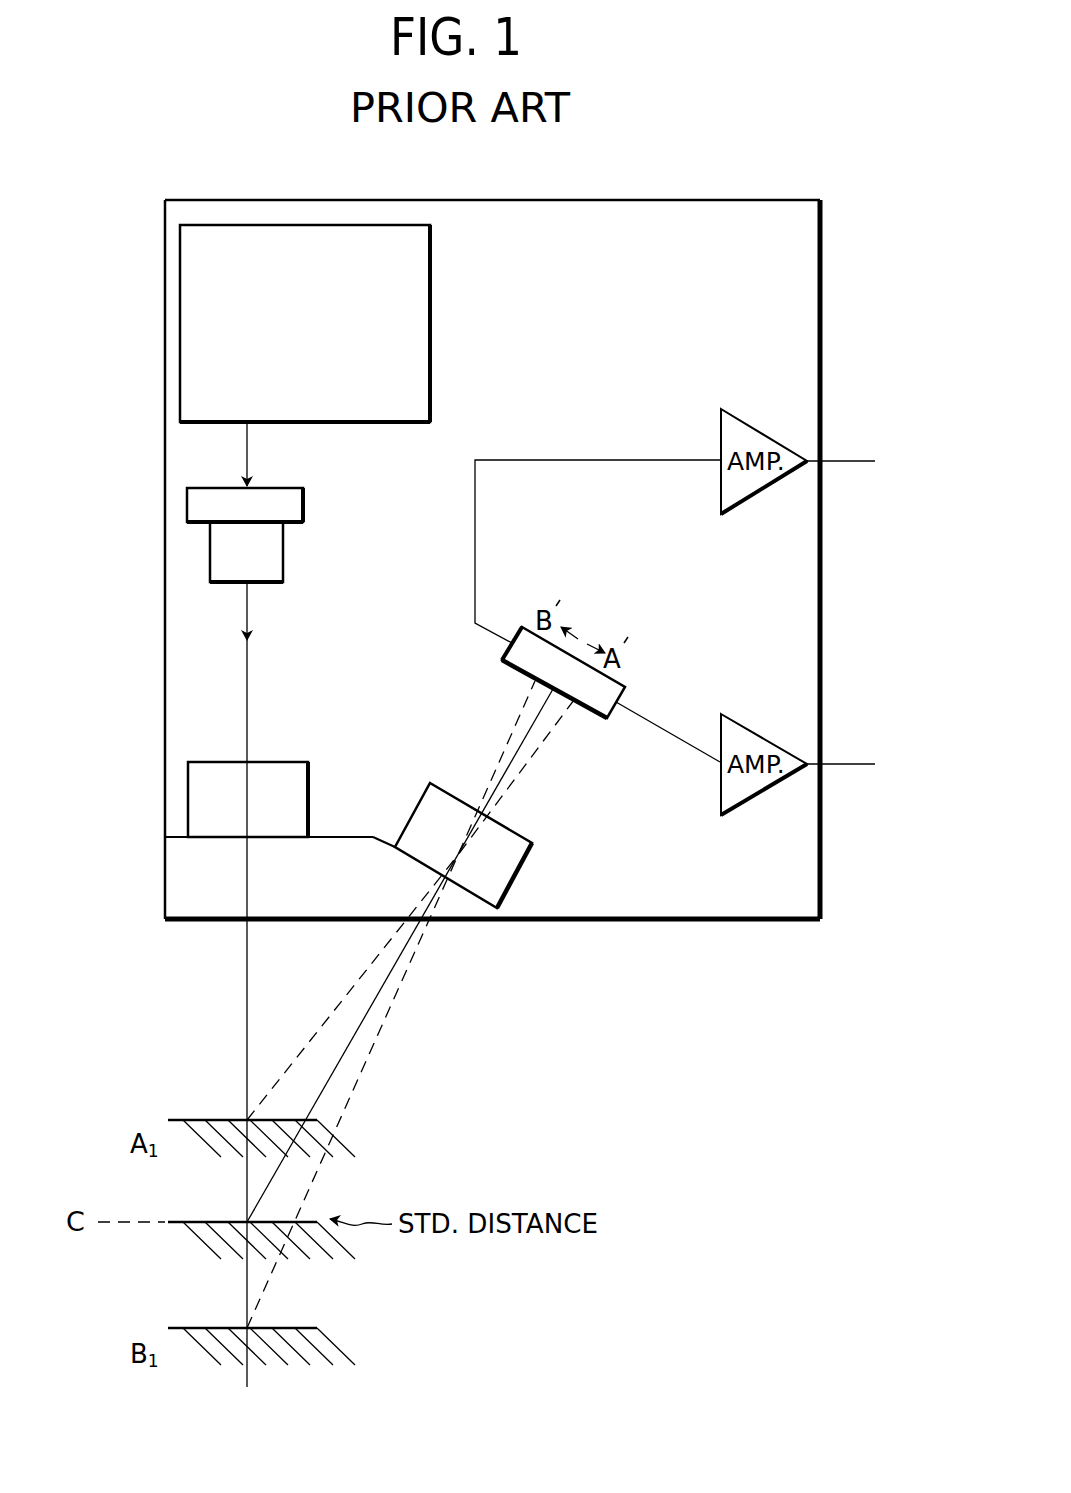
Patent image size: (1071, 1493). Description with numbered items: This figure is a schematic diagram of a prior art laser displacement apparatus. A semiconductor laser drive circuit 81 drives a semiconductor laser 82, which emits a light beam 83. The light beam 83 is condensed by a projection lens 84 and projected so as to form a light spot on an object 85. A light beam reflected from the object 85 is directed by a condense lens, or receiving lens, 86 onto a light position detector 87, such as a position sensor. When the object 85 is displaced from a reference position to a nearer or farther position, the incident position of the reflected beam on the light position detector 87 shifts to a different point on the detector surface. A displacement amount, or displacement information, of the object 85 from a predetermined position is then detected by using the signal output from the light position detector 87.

The semiconductor laser drive circuit 81 is at (430, 345).
The semiconductor laser 82 is at (303, 500).
The light beam 83 is at (247, 697).
The projection lens 84 is at (308, 795).
The object 85 is at (197, 1234).
The condense lens (receiving lens) 86 is at (515, 865).
The light position detector 87 is at (625, 688).